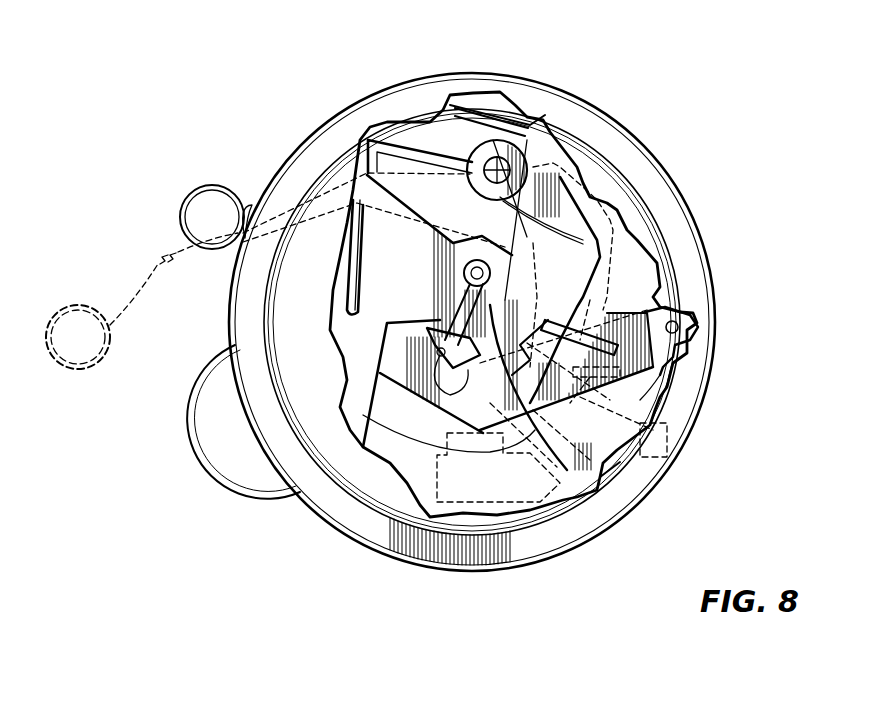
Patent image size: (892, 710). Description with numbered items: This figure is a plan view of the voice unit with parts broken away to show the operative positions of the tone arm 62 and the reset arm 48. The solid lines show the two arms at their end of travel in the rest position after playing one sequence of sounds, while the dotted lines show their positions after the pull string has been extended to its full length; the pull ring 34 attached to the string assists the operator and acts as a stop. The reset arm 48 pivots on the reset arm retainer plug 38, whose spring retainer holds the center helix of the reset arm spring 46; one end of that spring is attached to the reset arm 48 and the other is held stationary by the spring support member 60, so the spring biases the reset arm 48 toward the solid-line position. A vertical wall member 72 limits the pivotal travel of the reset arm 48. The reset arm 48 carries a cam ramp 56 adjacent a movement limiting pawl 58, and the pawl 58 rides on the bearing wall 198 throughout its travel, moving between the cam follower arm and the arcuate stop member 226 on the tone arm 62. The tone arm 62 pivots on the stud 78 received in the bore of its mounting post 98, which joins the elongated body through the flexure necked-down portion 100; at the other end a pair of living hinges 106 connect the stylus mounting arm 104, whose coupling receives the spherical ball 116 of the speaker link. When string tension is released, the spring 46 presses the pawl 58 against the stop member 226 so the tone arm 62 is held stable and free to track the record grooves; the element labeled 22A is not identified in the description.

The pull ring 34 is at (213, 185).
The reset arm retainer plug 38 is at (465, 140).
The reset arm spring 46 is at (540, 110).
The reset arm 48 is at (583, 190).
The spring support member 60 is at (480, 95).
The vertical wall member 72 is at (347, 296).
The spherical ball 116 is at (465, 270).
The stylus mounting arm 104 is at (437, 308).
The tone arm 62 is at (405, 335).
The living hinges 106 is at (445, 400).
The arcuate stop member 226 is at (485, 430).
The cam ramp 56 is at (508, 362).
The bar 22A is at (568, 312).
The stud 78 is at (682, 313).
The mounting post 98 is at (670, 340).
The flexure necked-down portion 100 is at (676, 375).
The bearing wall 198 is at (625, 478).
The movement limiting pawl 58 is at (612, 463).